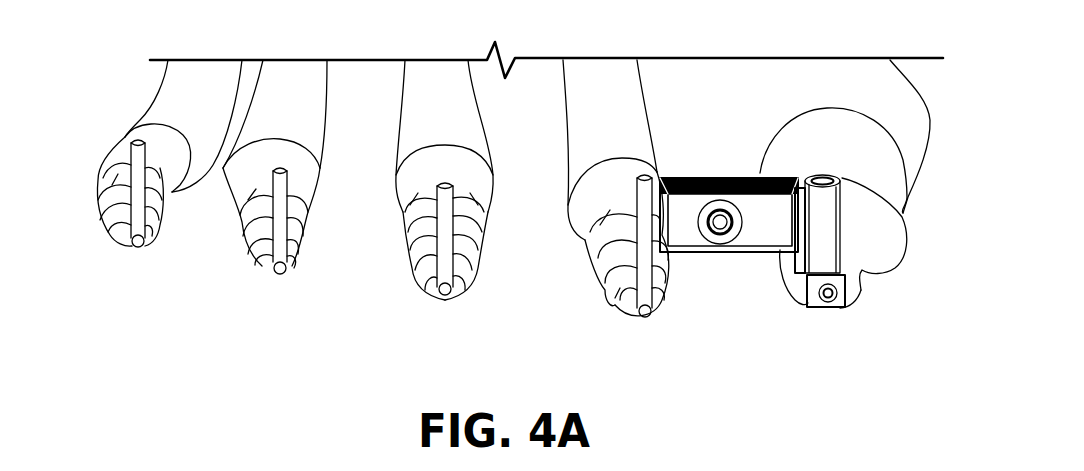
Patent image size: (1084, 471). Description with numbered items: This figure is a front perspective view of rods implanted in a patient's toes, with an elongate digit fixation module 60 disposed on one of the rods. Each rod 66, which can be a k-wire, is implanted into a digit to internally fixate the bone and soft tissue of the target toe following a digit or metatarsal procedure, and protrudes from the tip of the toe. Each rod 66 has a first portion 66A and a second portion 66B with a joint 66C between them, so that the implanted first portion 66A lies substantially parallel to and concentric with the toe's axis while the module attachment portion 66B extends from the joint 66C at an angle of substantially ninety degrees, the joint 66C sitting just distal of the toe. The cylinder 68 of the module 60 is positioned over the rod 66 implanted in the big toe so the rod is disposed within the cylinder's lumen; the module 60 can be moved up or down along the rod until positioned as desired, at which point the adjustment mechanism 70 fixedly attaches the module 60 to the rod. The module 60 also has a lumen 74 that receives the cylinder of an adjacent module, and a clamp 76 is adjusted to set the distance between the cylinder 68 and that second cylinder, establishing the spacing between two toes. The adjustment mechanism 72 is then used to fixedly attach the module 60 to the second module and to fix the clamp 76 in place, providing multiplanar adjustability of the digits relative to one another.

The digit fixation module 60 is at (713, 147).
The rod 66 is at (281, 303).
The first portion 66A is at (132, 241).
The second portion 66B is at (120, 163).
The joint 66C is at (155, 245).
The cylinder 68 is at (827, 220).
The adjustment mechanism 70 is at (837, 307).
The adjustment mechanism 72 is at (712, 233).
The lumen 74 is at (682, 165).
The clamp 76 is at (748, 232).